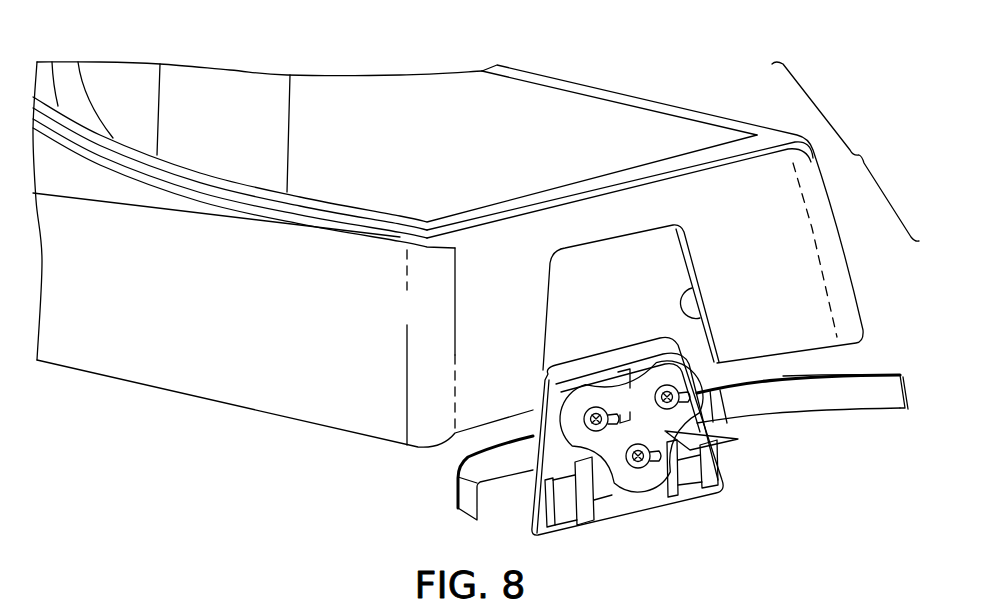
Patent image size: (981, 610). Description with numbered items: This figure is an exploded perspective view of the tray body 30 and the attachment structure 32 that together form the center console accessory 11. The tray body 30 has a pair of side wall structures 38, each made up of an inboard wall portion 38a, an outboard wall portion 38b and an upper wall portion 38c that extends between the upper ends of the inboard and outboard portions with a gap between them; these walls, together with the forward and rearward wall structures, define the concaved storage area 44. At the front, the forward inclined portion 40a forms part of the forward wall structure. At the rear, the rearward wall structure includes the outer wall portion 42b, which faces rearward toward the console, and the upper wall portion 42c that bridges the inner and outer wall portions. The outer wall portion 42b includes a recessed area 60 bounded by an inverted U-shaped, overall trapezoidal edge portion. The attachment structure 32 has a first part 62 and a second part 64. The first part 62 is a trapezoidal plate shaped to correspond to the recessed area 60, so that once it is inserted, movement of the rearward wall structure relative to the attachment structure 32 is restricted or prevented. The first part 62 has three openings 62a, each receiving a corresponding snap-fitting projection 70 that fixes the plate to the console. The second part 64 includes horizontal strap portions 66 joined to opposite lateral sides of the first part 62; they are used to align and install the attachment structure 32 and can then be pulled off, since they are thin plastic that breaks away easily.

The center console accessory 11 is at (845, 151).
The tray body 30 is at (703, 114).
The attachment structure 32 is at (883, 370).
The side wall structures 38 is at (548, 123).
The inboard wall portion 38a is at (450, 130).
The outboard wall portion 38b is at (177, 338).
The upper wall portion 38c is at (657, 102).
The forward inclined portion 40a is at (648, 256).
The outer wall portion 42b is at (500, 263).
The upper wall portion 42c is at (645, 177).
The concaved storage area 44 is at (732, 160).
The recessed area 60 is at (707, 318).
The first part 62 is at (600, 500).
The openings 62a is at (584, 407).
The second part 64 is at (780, 416).
The horizontal strap portions 66 is at (843, 394).
The snap-fitting projections 70 is at (716, 440).